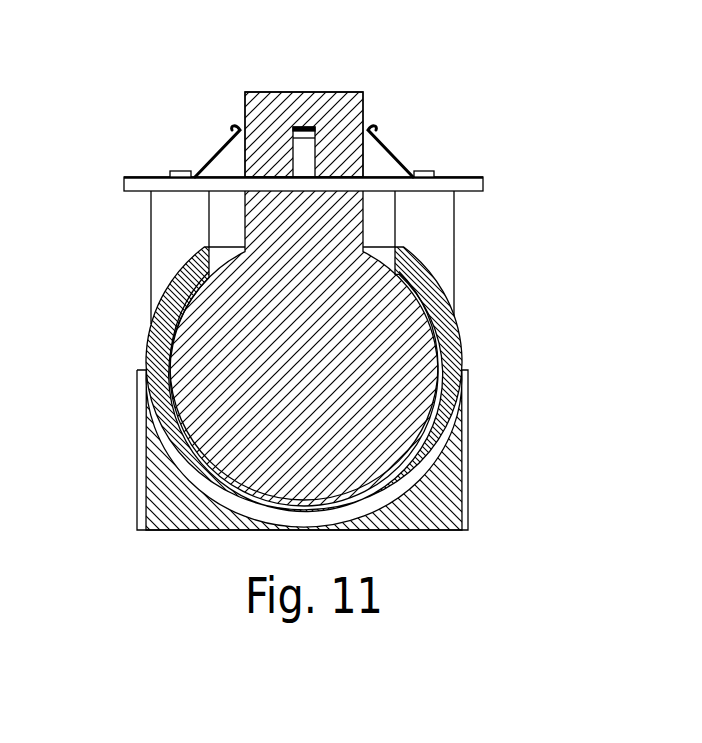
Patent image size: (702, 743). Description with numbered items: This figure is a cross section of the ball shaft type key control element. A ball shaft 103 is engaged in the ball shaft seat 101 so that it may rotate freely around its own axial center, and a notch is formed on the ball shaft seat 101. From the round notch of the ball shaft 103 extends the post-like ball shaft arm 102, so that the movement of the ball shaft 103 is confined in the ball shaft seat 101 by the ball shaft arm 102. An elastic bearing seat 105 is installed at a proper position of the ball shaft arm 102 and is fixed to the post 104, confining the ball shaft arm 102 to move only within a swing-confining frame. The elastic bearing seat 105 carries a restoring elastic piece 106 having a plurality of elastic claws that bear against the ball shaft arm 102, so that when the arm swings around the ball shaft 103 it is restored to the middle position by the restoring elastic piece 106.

The ball shaft seat 101 is at (430, 483).
The ball shaft arm 102 is at (285, 125).
The ball shaft 103 is at (393, 318).
The post 104 is at (175, 222).
The elastic bearing seat 105 is at (475, 188).
The restoring elastic piece 106 is at (390, 155).